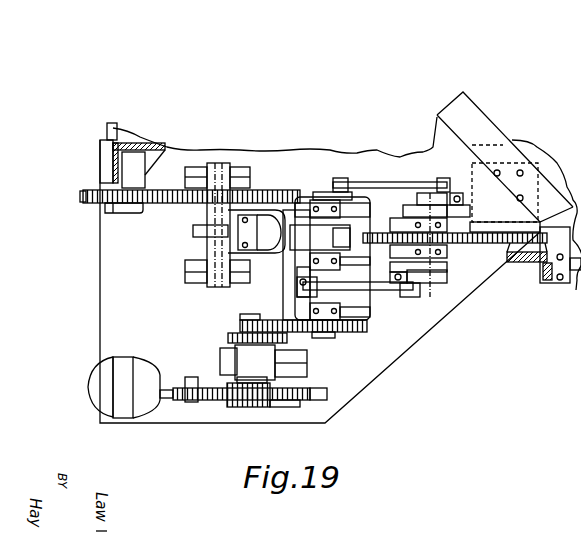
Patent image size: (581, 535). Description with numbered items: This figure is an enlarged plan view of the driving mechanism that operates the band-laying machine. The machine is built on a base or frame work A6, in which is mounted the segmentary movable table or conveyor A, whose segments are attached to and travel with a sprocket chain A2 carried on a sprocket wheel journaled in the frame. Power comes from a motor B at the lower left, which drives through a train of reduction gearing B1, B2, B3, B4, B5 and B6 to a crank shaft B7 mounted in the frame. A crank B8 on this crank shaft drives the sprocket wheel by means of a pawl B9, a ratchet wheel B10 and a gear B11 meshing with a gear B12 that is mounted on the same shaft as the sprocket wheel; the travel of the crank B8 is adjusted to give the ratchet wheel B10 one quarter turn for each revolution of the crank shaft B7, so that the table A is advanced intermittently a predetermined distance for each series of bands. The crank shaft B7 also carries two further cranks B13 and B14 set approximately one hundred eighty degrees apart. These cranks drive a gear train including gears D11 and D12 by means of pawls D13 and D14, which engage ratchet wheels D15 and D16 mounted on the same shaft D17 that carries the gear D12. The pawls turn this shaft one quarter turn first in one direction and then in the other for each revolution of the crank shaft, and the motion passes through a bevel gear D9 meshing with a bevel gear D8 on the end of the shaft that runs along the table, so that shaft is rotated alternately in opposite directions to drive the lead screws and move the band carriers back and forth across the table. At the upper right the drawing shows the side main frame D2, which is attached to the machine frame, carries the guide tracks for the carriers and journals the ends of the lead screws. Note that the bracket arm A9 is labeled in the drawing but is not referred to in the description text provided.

The segmentary movable table or conveyor A is at (567, 318).
The sprocket chain A2 is at (580, 420).
The base or frame work A6 is at (302, 422).
The bracket arm A9 is at (150, 147).
The motor B is at (90, 397).
The reduction gearing B1 is at (242, 408).
The reduction gearing B2 is at (580, 508).
The reduction gearing B3 is at (580, 370).
The reduction gearing B4 is at (287, 340).
The reduction gearing B5 is at (242, 316).
The reduction gearing B6 is at (352, 332).
The crank shaft B7 is at (298, 275).
The crank B8 is at (268, 253).
The pawl B9 is at (233, 230).
The ratchet wheel B10 is at (193, 233).
The gear B11 is at (263, 193).
The gear B12 is at (88, 200).
The crank B13 is at (368, 182).
The crank B14 is at (377, 293).
The frame D2 is at (477, 98).
The bevel gear D8 is at (543, 280).
The bevel gear D9 is at (513, 262).
The gear D11 is at (490, 243).
The gear D12 is at (447, 260).
The pawl D13 is at (450, 193).
The pawl D14 is at (407, 297).
The ratchet wheel D15 is at (410, 203).
The ratchet wheel D16 is at (450, 268).
The shaft D17 is at (417, 283).